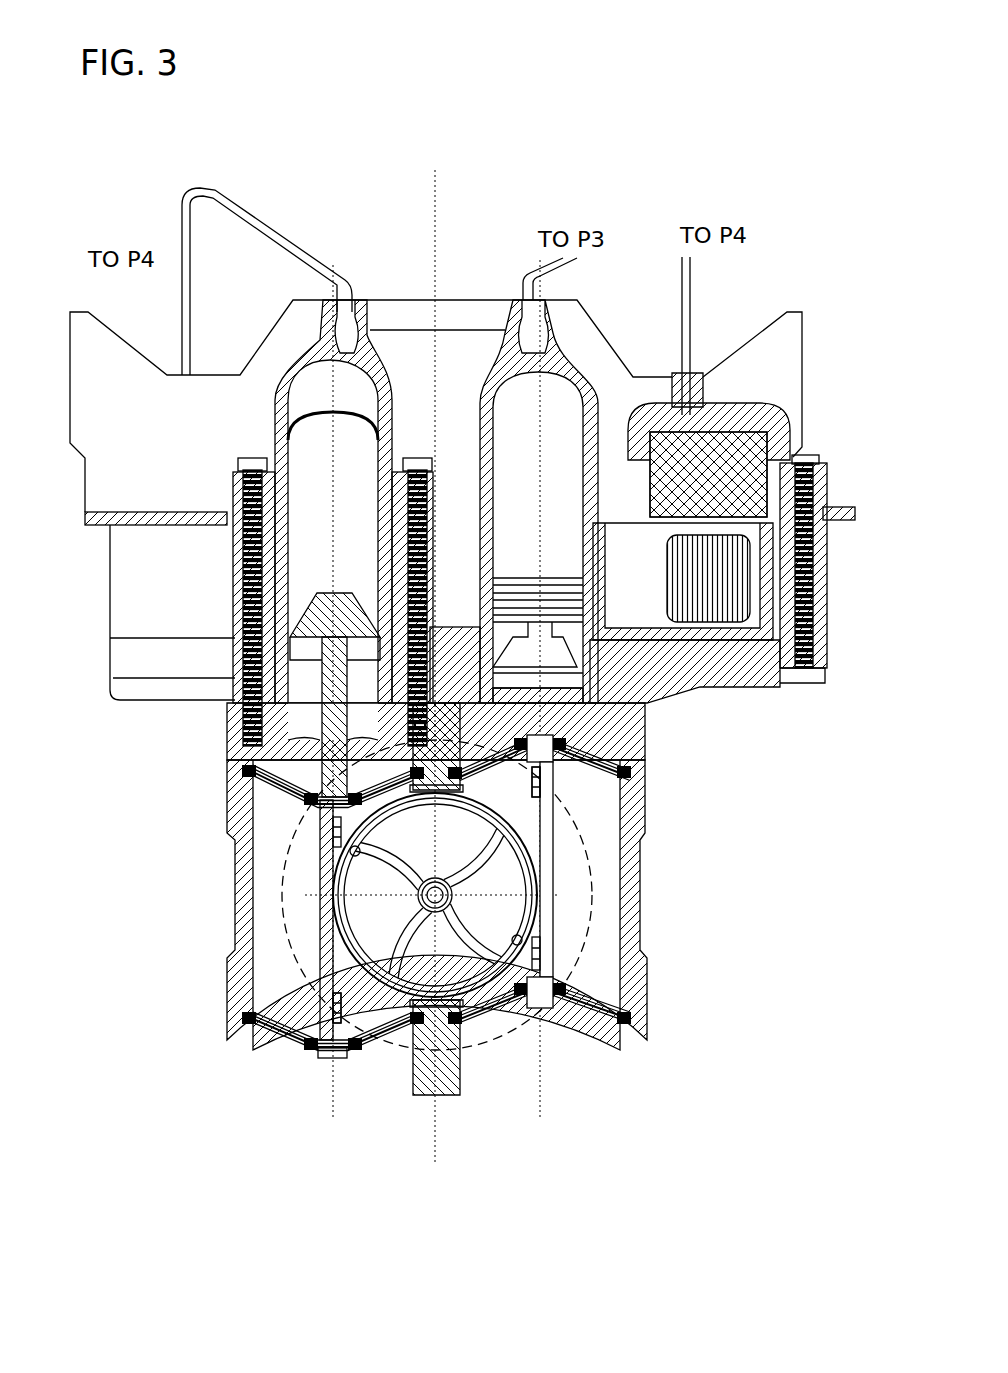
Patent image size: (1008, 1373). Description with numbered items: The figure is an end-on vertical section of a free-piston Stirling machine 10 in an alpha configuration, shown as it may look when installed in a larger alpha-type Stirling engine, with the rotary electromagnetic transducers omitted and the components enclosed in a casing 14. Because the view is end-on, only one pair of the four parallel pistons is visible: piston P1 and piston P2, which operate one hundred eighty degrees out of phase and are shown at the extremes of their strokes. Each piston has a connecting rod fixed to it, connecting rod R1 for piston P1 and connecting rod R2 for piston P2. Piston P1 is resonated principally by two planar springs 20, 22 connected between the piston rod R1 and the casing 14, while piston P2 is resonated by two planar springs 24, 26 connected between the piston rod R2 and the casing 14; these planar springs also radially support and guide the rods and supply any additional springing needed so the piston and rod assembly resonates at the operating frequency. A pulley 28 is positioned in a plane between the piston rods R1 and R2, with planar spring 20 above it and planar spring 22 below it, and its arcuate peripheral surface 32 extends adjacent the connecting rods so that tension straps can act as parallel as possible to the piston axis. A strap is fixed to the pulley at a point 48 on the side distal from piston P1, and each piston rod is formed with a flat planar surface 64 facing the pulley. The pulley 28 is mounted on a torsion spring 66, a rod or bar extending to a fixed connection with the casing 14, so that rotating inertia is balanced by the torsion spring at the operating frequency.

The free-piston Stirling machine 10 is at (548, 118).
The casing 14 is at (630, 800).
The planar spring 20 is at (320, 792).
The planar spring 22 is at (330, 1015).
The planar spring 24 is at (560, 760).
The planar spring 26 is at (590, 1005).
The pulley 28 is at (473, 997).
The arcuate peripheral surface 32 is at (335, 945).
The point 48 is at (540, 937).
The flat planar surface 64 is at (525, 815).
The torsion spring 66 is at (433, 912).
The connecting rod R1 is at (315, 765).
The connecting rod R2 is at (550, 912).
The piston P1 is at (333, 501).
The piston P2 is at (539, 501).